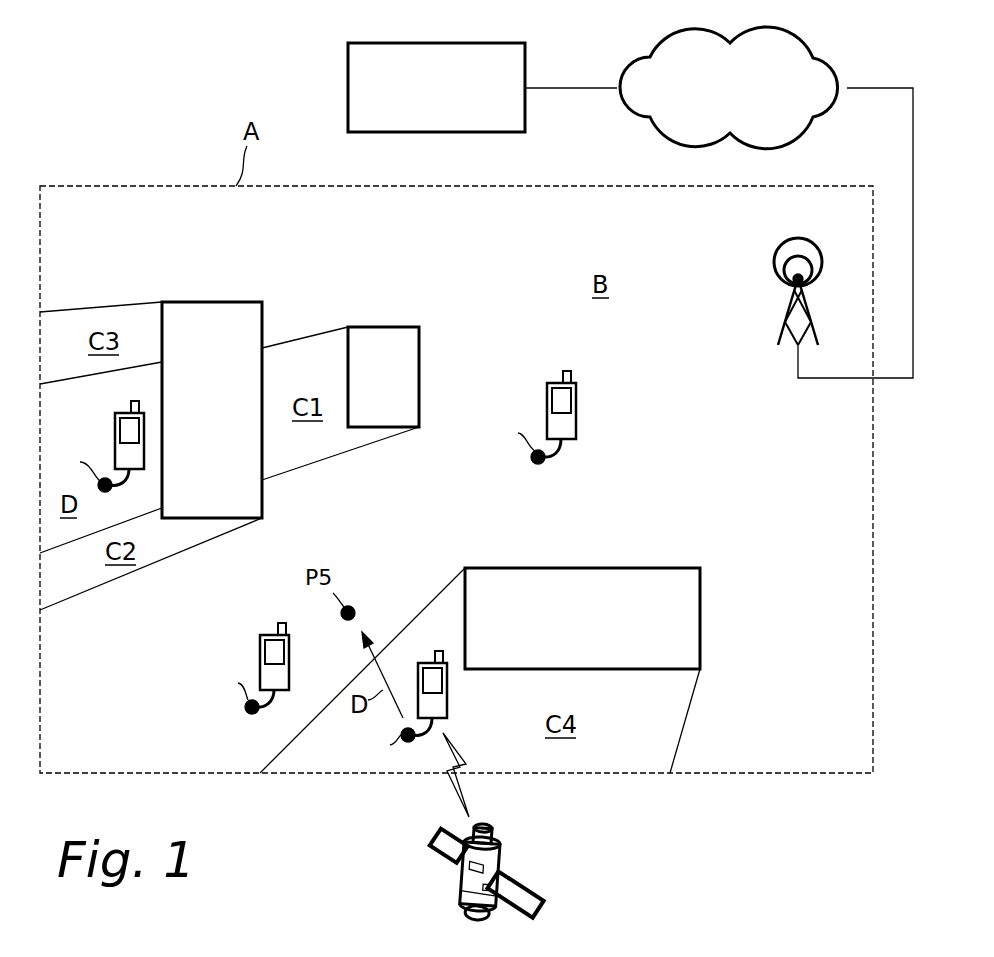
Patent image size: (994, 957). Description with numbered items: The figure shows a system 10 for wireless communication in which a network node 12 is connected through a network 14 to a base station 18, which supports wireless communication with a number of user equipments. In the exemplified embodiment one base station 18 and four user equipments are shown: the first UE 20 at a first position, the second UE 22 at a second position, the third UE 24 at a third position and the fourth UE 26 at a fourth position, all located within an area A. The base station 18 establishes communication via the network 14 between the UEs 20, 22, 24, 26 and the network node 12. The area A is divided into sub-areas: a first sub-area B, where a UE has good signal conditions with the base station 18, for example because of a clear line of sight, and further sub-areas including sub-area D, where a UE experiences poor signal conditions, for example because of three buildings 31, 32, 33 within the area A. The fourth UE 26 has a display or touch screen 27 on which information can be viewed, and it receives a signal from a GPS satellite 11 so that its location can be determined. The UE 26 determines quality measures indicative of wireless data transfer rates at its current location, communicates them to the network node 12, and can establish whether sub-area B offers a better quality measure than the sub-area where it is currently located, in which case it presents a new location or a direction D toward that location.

The system 10 is at (118, 128).
The GPS satellite 11 is at (462, 890).
The network node 12 is at (420, 102).
The network 14 is at (714, 102).
The base station 18 is at (785, 310).
The first user equipment 20 is at (545, 393).
The second user equipment 22 is at (258, 642).
The third user equipment 24 is at (113, 425).
The fourth user equipment 26 is at (425, 662).
The display of mobile device 27 is at (433, 680).
The building 31 is at (367, 390).
The building 32 is at (196, 423).
The building 33 is at (566, 633).